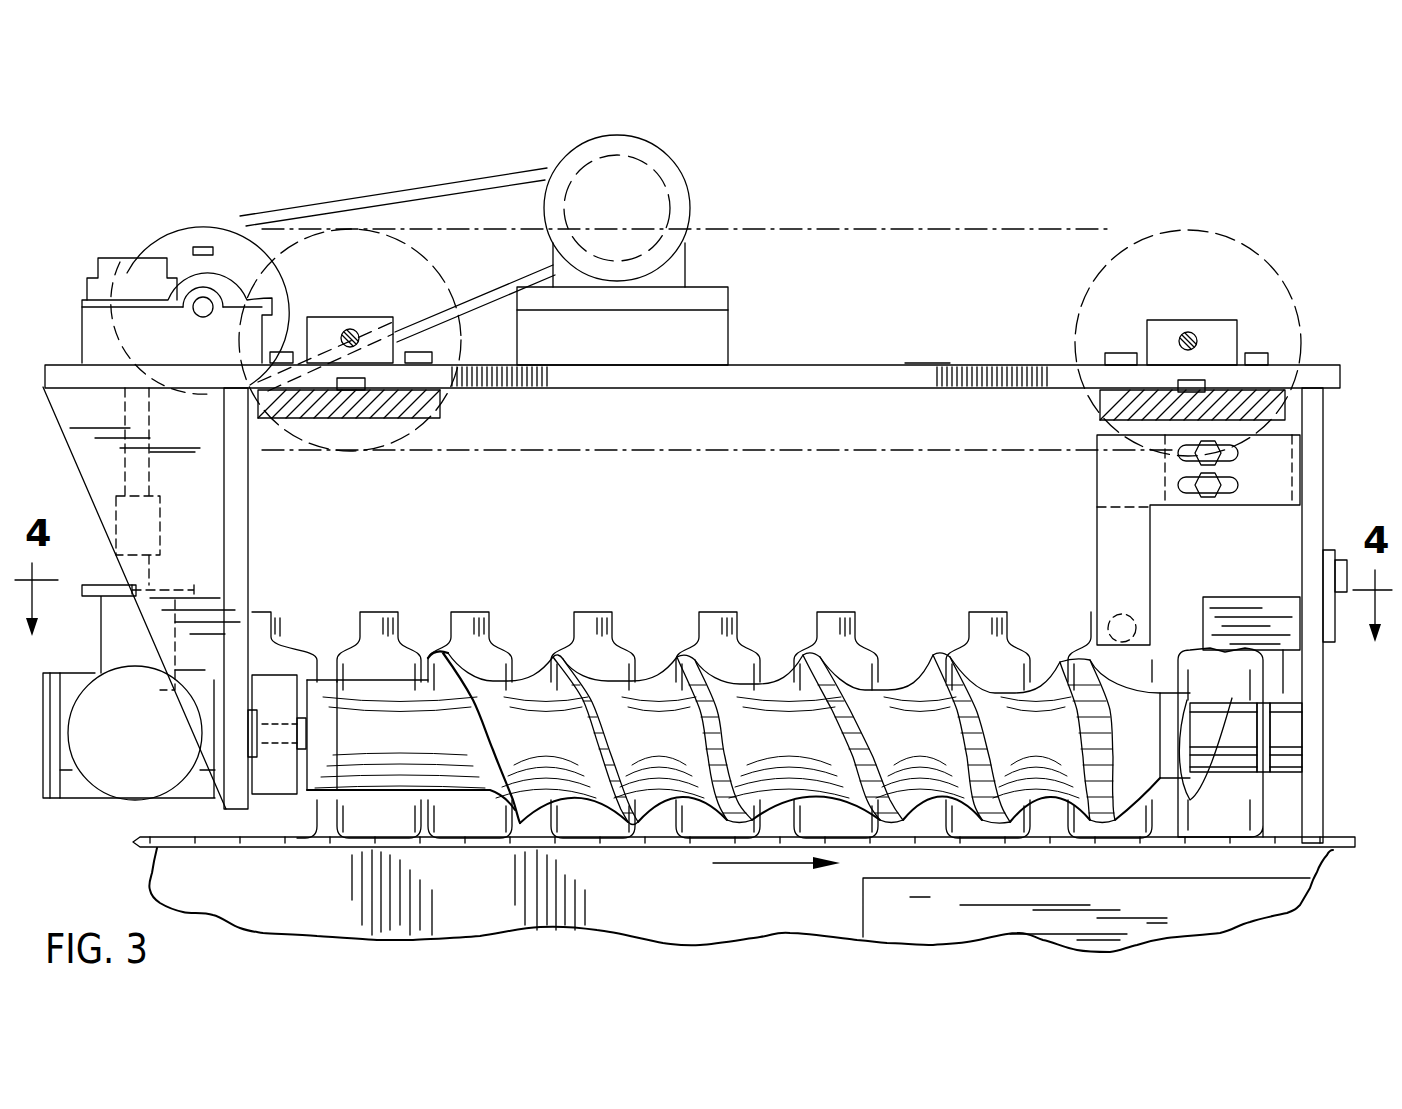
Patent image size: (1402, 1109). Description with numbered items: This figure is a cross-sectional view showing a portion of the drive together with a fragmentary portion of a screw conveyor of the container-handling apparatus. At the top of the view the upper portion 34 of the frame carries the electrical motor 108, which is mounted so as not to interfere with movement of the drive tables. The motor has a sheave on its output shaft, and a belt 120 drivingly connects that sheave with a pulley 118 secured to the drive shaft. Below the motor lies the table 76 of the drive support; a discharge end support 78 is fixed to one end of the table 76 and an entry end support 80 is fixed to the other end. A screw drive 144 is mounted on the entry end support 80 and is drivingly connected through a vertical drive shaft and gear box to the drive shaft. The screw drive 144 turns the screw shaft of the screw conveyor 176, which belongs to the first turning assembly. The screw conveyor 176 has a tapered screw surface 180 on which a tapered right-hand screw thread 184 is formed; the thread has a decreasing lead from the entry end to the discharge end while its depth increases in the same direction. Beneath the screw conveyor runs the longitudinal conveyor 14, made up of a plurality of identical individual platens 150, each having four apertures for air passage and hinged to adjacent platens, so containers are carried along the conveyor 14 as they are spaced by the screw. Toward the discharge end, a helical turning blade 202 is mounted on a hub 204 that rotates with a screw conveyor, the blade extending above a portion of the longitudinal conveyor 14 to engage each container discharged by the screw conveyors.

The longitudinal conveyor 14 is at (329, 849).
The upper portion 34 is at (922, 362).
The table 76 is at (806, 372).
The discharge end support 78 is at (1315, 460).
The entry end support 80 is at (239, 507).
The electrical motor 108 is at (678, 202).
The pulley 118 is at (192, 232).
The belt 120 is at (438, 188).
The screw drive 144 is at (132, 781).
The platen 150 is at (238, 848).
The screw conveyor 176 is at (733, 733).
The tapered screw surface 180 is at (592, 815).
The tapered right-hand screw thread 184 is at (492, 790).
The helical turning blade 202 is at (1220, 725).
The hub 204 is at (1243, 755).